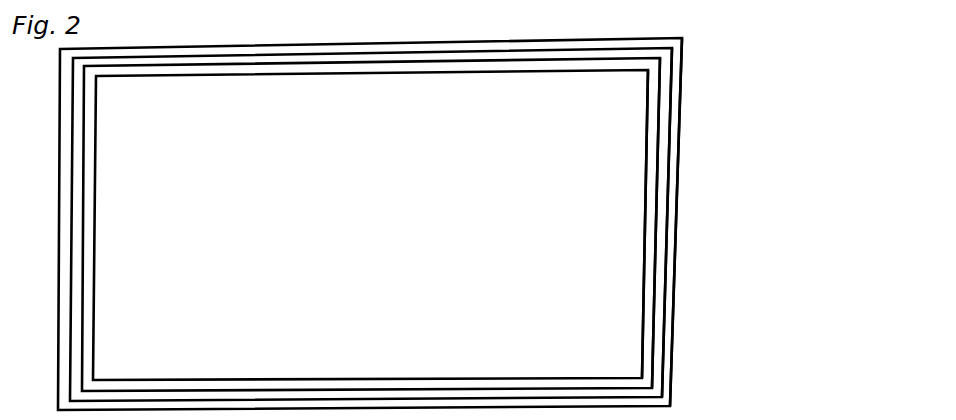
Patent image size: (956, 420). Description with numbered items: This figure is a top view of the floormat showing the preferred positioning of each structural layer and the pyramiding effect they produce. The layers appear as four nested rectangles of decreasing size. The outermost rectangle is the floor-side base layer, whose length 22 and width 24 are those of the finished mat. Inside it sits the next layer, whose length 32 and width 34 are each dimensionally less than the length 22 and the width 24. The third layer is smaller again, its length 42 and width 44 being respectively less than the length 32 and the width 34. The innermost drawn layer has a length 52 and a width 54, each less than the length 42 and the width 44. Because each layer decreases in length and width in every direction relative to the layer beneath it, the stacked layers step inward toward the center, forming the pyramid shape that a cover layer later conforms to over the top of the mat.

The length 22 is at (462, 224).
The length 32 is at (468, 224).
The length 42 is at (474, 224).
The length 52 is at (479, 225).
The width 24 is at (767, 222).
The width 34 is at (763, 222).
The width 44 is at (758, 223).
The width 54 is at (753, 224).